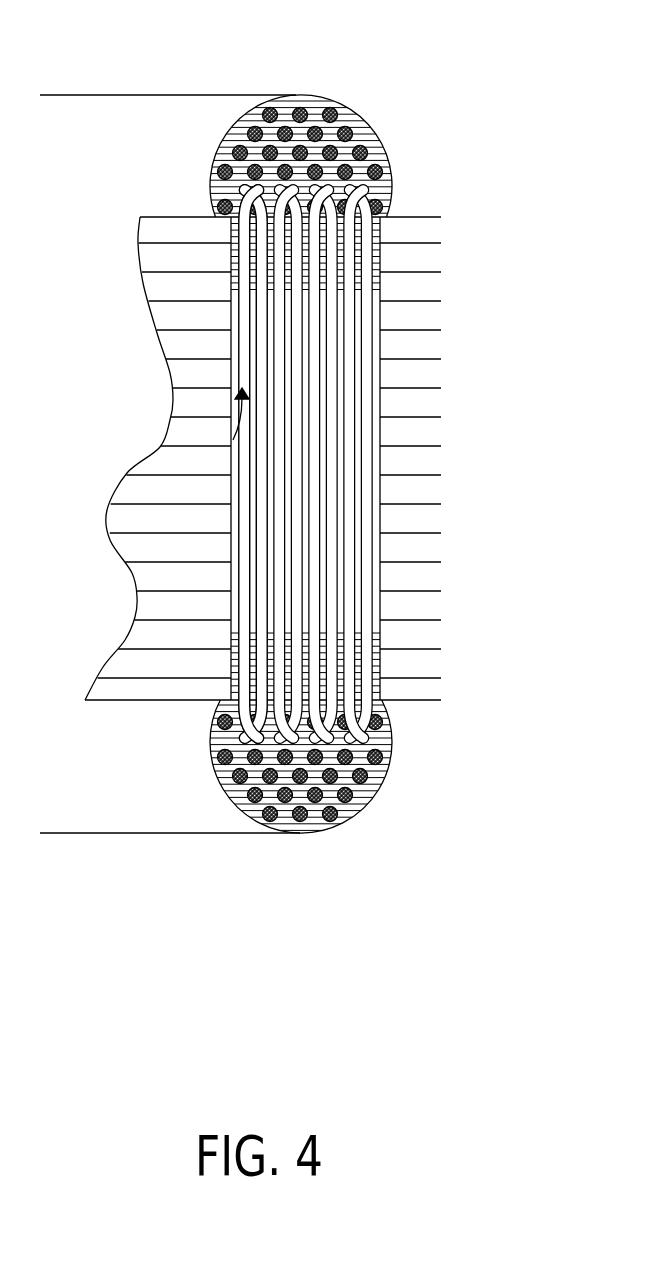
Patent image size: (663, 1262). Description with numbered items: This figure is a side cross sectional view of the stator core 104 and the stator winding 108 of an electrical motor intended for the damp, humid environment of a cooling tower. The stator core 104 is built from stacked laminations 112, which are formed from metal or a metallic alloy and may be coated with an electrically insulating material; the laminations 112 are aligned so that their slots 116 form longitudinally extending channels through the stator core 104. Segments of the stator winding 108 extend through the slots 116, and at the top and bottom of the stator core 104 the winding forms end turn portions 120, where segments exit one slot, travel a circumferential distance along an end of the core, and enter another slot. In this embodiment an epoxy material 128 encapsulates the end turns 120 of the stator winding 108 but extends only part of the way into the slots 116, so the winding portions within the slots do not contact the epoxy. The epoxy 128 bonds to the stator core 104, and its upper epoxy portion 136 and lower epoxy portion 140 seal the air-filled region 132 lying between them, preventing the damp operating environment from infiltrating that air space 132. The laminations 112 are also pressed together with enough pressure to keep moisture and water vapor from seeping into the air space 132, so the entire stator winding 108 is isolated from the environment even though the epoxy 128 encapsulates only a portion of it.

The stator core 104 is at (442, 252).
The stator winding 108 is at (367, 552).
The laminations 112 is at (442, 437).
The slots 116 is at (228, 198).
The end turn portions 120 is at (286, 453).
The epoxy material 128 is at (323, 97).
The air-filled region 132 is at (233, 440).
The upper epoxy portion 136 is at (295, 95).
The lower epoxy portion 140 is at (297, 832).